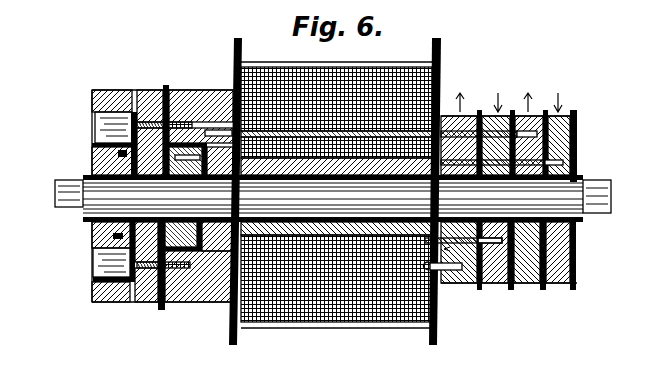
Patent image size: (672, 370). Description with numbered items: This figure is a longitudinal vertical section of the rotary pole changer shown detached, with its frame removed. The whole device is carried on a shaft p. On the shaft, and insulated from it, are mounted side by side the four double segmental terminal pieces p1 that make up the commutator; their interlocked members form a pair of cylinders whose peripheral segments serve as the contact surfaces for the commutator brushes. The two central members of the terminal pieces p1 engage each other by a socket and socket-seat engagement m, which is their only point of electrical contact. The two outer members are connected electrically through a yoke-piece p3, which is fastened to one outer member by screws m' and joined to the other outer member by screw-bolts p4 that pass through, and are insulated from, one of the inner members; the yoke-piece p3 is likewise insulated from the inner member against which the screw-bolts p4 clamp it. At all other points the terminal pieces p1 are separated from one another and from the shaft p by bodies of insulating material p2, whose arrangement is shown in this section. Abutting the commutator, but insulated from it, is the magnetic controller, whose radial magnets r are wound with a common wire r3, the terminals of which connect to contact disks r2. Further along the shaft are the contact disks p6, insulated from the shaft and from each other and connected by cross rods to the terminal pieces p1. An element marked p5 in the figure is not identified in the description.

The shaft p is at (581, 182).
The double segmental terminal pieces p1 is at (127, 318).
The insulating material p2 is at (239, 38).
The yoke-piece p3 is at (199, 110).
The screw-bolts p4 is at (130, 126).
The end block p5 is at (548, 175).
The contact disks p6 is at (561, 283).
The socket and socket-seat engagement m is at (142, 226).
The screws m' is at (74, 210).
The radial magnets r is at (341, 300).
The contact disks r2 is at (470, 285).
The common wire r3 is at (495, 245).